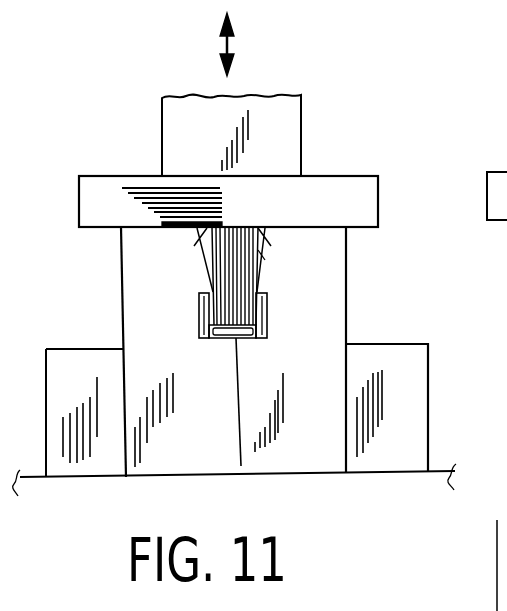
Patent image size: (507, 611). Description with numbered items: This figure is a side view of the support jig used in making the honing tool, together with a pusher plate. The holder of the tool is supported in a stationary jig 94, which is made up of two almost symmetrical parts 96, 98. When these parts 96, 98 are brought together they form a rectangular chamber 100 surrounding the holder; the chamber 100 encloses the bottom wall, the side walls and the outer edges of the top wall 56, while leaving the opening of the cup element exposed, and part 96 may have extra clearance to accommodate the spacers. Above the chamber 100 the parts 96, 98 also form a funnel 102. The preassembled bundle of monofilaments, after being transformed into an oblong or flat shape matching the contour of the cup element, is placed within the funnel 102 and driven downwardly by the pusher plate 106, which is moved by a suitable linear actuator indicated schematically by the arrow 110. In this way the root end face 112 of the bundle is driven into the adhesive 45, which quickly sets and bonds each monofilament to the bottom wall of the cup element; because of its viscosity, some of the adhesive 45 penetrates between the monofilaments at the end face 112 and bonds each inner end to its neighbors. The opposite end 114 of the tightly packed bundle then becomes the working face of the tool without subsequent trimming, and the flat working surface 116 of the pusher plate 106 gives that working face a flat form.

The adhesive 45 is at (221, 338).
The top wall 56 is at (265, 284).
The stationary jig 94 is at (392, 422).
The part 96 is at (122, 325).
The part 98 is at (320, 320).
The rectangular chamber 100 is at (202, 305).
The funnel 102 is at (267, 233).
The pusher plate 106 is at (340, 186).
The arrow 110 is at (236, 22).
The root end face 112 is at (262, 317).
The opposite end 114 is at (248, 226).
The flat working surface 116 is at (205, 238).